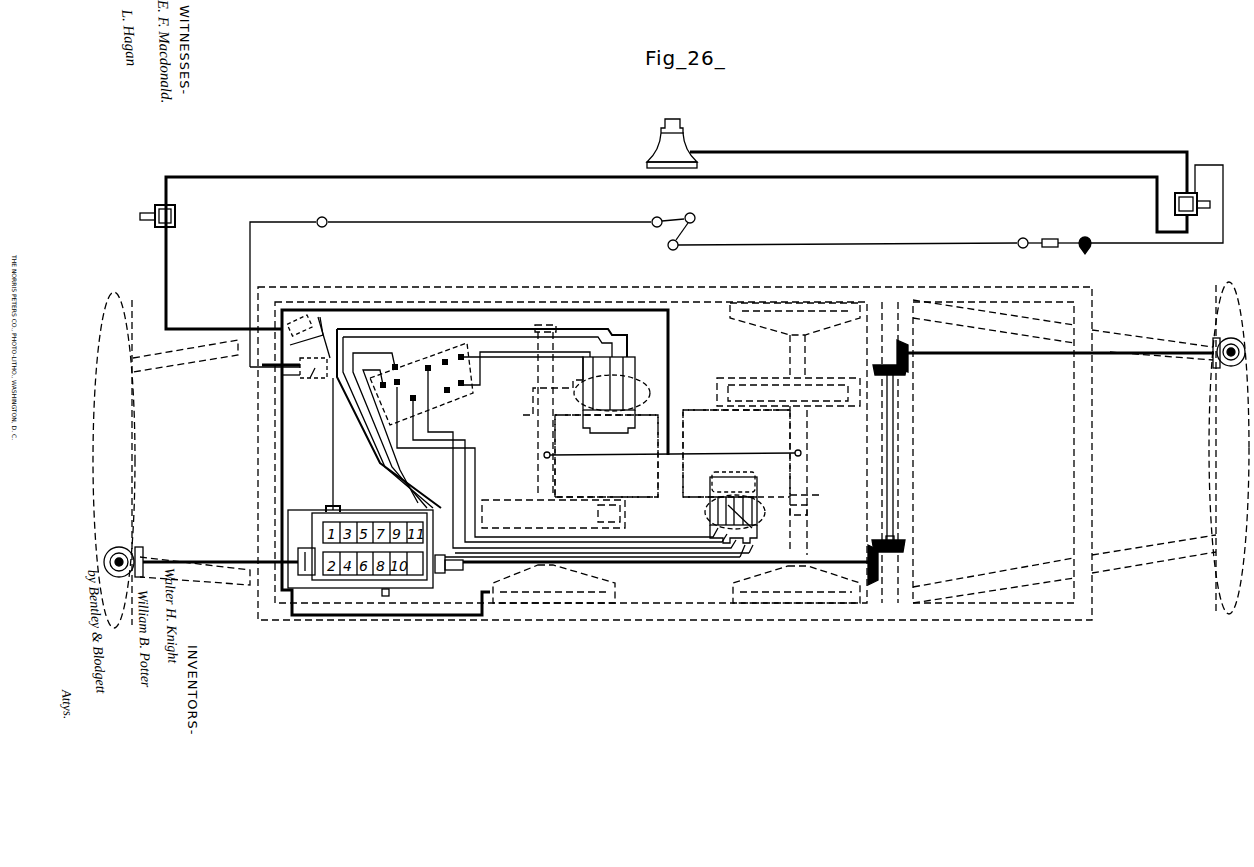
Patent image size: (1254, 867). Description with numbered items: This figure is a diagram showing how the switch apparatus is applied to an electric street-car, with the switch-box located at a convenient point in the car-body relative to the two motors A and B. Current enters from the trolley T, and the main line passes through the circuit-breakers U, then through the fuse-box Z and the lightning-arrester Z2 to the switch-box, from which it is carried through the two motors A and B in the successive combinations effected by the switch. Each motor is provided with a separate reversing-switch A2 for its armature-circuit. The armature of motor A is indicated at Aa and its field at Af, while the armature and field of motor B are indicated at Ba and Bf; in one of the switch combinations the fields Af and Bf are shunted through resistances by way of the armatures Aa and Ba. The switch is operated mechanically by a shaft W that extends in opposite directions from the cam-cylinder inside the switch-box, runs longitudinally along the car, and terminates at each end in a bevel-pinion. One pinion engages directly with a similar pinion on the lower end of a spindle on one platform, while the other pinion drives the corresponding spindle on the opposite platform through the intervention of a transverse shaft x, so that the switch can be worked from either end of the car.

The trolley T is at (690, 136).
The circuit-breakers U is at (675, 199).
The fuse-box Z is at (312, 334).
The lightning-arrester Z2 is at (314, 434).
The reversing-switch A2 is at (536, 438).
The field of motor B Bf is at (630, 393).
The armature of motor B Ba is at (606, 456).
The motor B is at (672, 465).
The motor A is at (736, 453).
The armature of motor A Aa is at (733, 474).
The field of motor A Af is at (758, 524).
The shaft W is at (192, 568).
The transverse shaft x is at (905, 468).